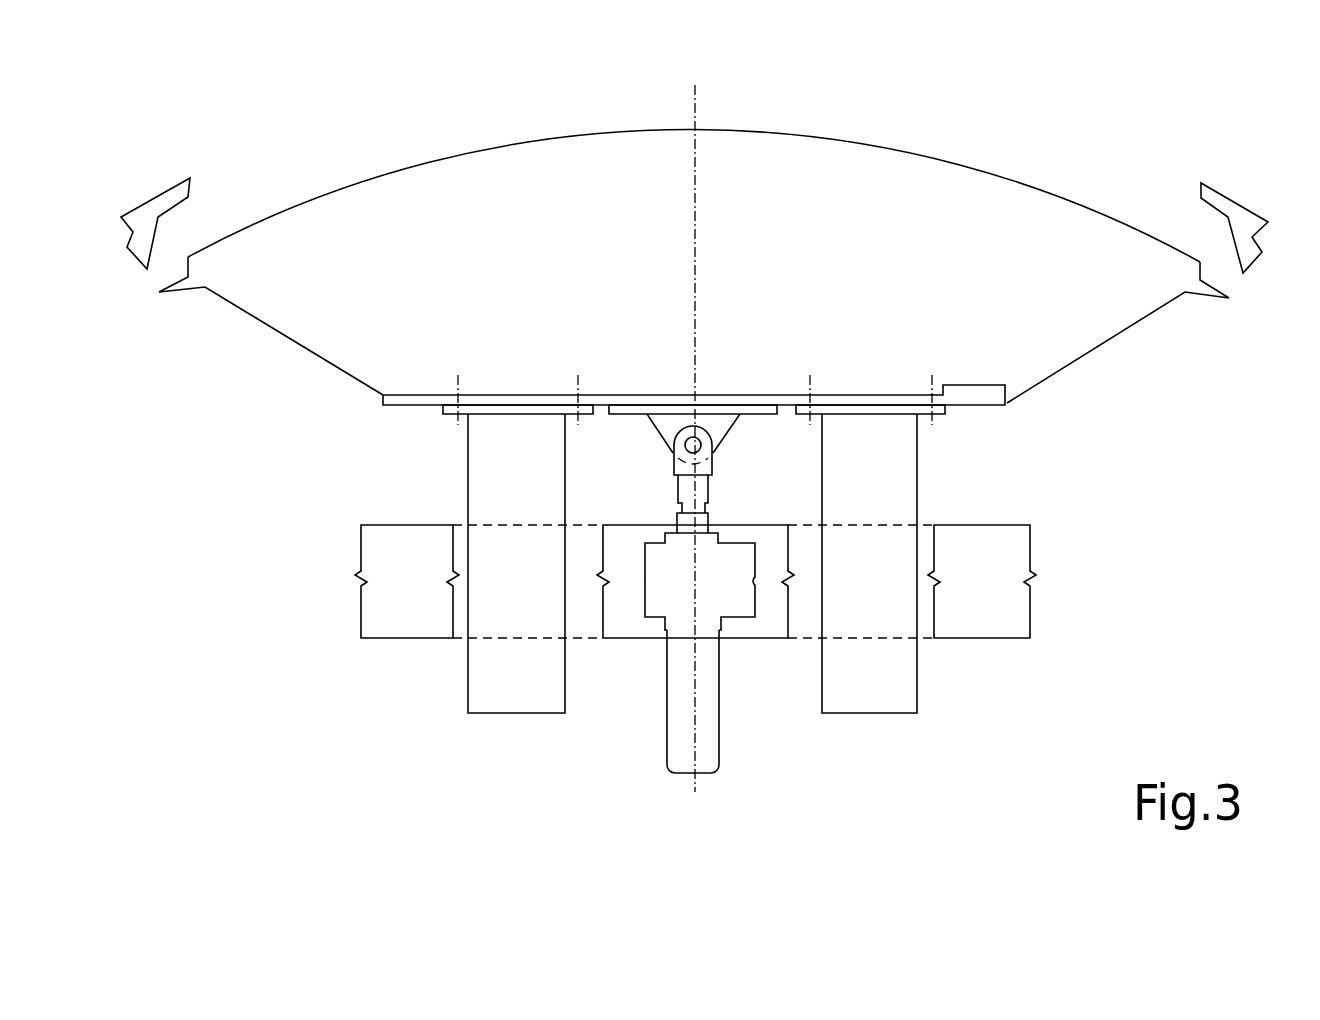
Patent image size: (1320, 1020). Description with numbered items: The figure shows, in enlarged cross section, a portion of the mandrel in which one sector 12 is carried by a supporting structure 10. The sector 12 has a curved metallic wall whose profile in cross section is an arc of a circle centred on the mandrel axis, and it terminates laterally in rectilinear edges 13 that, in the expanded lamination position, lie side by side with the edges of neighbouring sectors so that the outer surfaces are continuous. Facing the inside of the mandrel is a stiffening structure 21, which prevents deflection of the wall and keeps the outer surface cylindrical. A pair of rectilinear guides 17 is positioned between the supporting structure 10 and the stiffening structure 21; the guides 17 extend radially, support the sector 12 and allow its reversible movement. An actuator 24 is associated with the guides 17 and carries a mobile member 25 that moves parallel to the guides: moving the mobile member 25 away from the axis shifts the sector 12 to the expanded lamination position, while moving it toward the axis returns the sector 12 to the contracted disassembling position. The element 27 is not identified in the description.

The supporting structure 10 is at (367, 617).
The sector 12 is at (136, 196).
The rectilinear edge 13 is at (167, 197).
The rectilinear guide 17 is at (473, 482).
The stiffening structure 21 is at (598, 292).
The actuator 24 is at (646, 735).
The mobile member 25 is at (700, 525).
The piston rod 27 is at (734, 708).